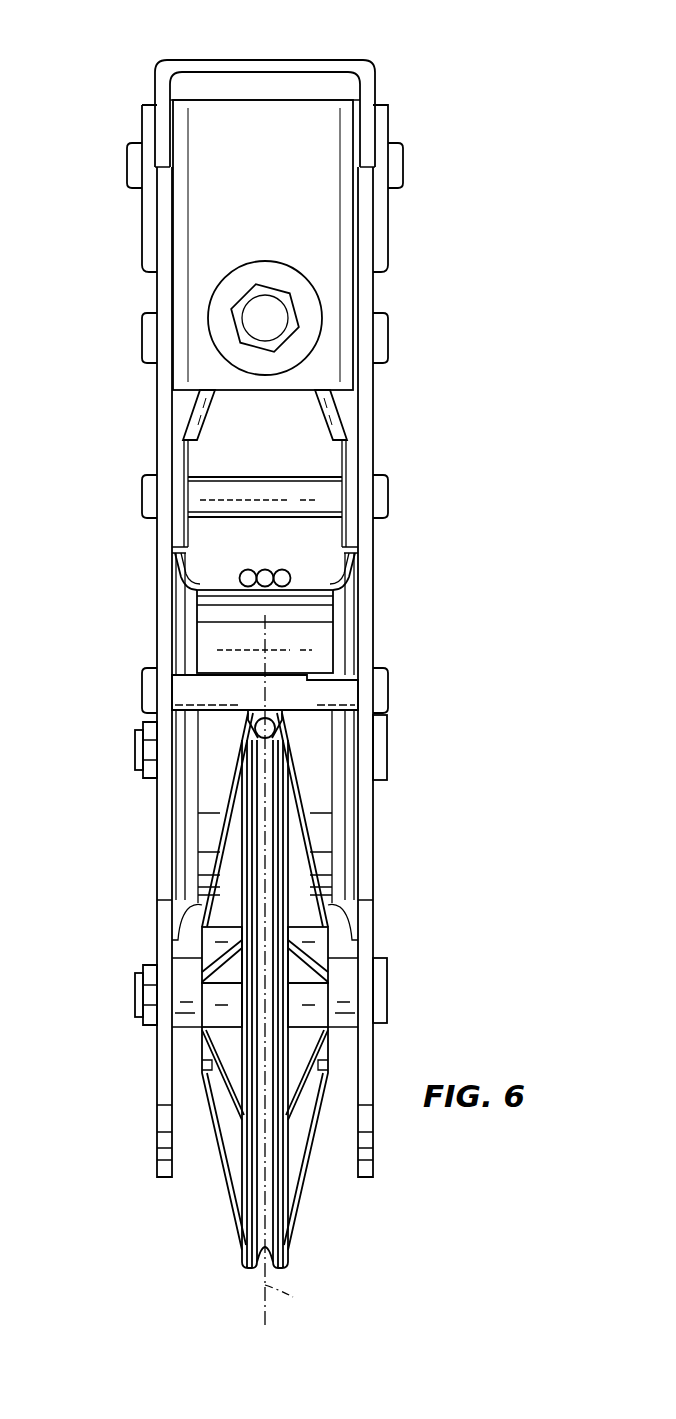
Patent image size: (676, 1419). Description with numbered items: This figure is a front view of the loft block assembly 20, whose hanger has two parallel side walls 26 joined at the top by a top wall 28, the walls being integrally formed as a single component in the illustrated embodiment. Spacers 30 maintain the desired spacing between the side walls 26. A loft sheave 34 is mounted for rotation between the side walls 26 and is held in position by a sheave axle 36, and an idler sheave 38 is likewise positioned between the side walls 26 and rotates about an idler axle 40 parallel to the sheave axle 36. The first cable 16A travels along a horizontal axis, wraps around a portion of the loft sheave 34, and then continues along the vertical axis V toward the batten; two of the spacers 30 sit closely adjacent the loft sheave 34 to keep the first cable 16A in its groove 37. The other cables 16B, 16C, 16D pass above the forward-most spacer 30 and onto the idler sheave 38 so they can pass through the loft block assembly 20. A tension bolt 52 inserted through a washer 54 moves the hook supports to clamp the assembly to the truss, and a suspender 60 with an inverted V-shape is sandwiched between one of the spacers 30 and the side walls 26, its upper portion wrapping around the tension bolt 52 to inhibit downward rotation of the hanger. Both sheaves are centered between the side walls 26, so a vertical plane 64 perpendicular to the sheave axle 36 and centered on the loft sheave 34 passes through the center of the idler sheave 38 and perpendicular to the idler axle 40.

The loft block assembly 20 is at (461, 215).
The side walls 26 is at (157, 418).
The top wall 28 is at (270, 60).
The spacers 30 is at (237, 487).
The loft sheave 34 is at (242, 1244).
The sheave axle 36 is at (142, 995).
The groove 37 is at (265, 1172).
The idler sheave 38 is at (193, 638).
The idler axle 40 is at (142, 750).
The tension bolt 52 is at (260, 312).
The washer 54 is at (295, 283).
The suspender 60 is at (337, 408).
The vertical plane 64 is at (265, 690).
The first cable 16A is at (281, 718).
The cable 16B is at (244, 575).
The cable 16C is at (264, 572).
The cable 16D is at (288, 573).